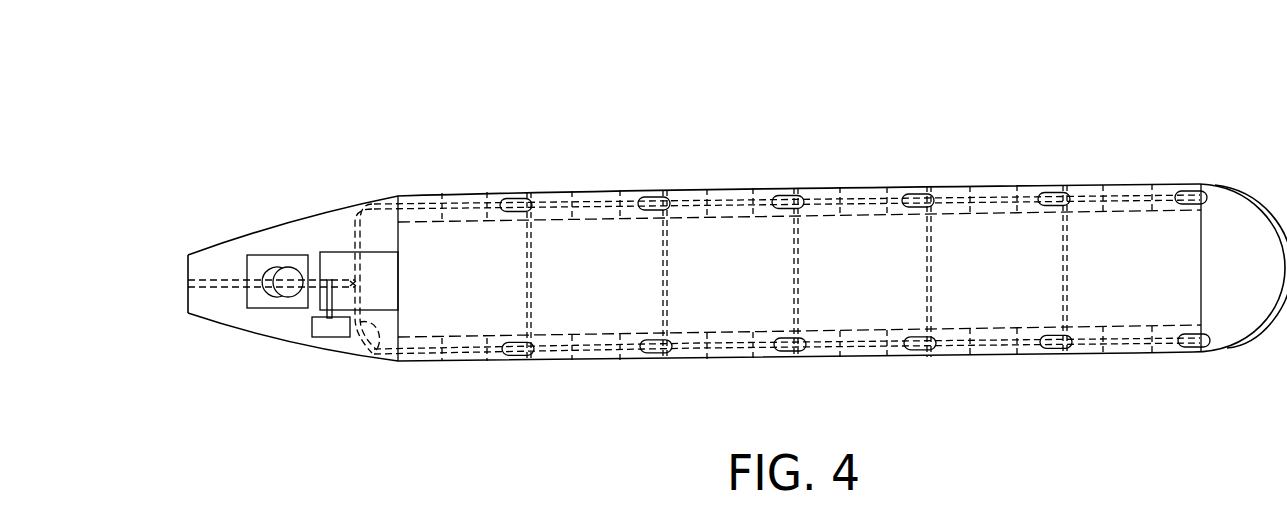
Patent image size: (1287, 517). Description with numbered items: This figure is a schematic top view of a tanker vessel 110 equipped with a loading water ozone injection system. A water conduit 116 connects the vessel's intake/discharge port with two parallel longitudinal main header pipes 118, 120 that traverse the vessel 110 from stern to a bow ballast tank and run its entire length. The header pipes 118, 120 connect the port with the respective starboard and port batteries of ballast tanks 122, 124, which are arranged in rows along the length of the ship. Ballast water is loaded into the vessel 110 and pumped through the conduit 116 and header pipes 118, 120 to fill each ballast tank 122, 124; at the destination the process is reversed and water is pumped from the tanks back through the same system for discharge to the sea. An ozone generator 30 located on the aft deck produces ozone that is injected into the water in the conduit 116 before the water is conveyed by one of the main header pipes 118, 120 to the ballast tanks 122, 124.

The vessel 110 is at (1092, 99).
The water conduit 116 is at (220, 282).
The main header pipe 118 is at (378, 350).
The main header pipe 120 is at (353, 238).
The ballast tanks 122 is at (467, 362).
The ballast tanks 124 is at (470, 192).
The ozone generator 30 is at (328, 338).